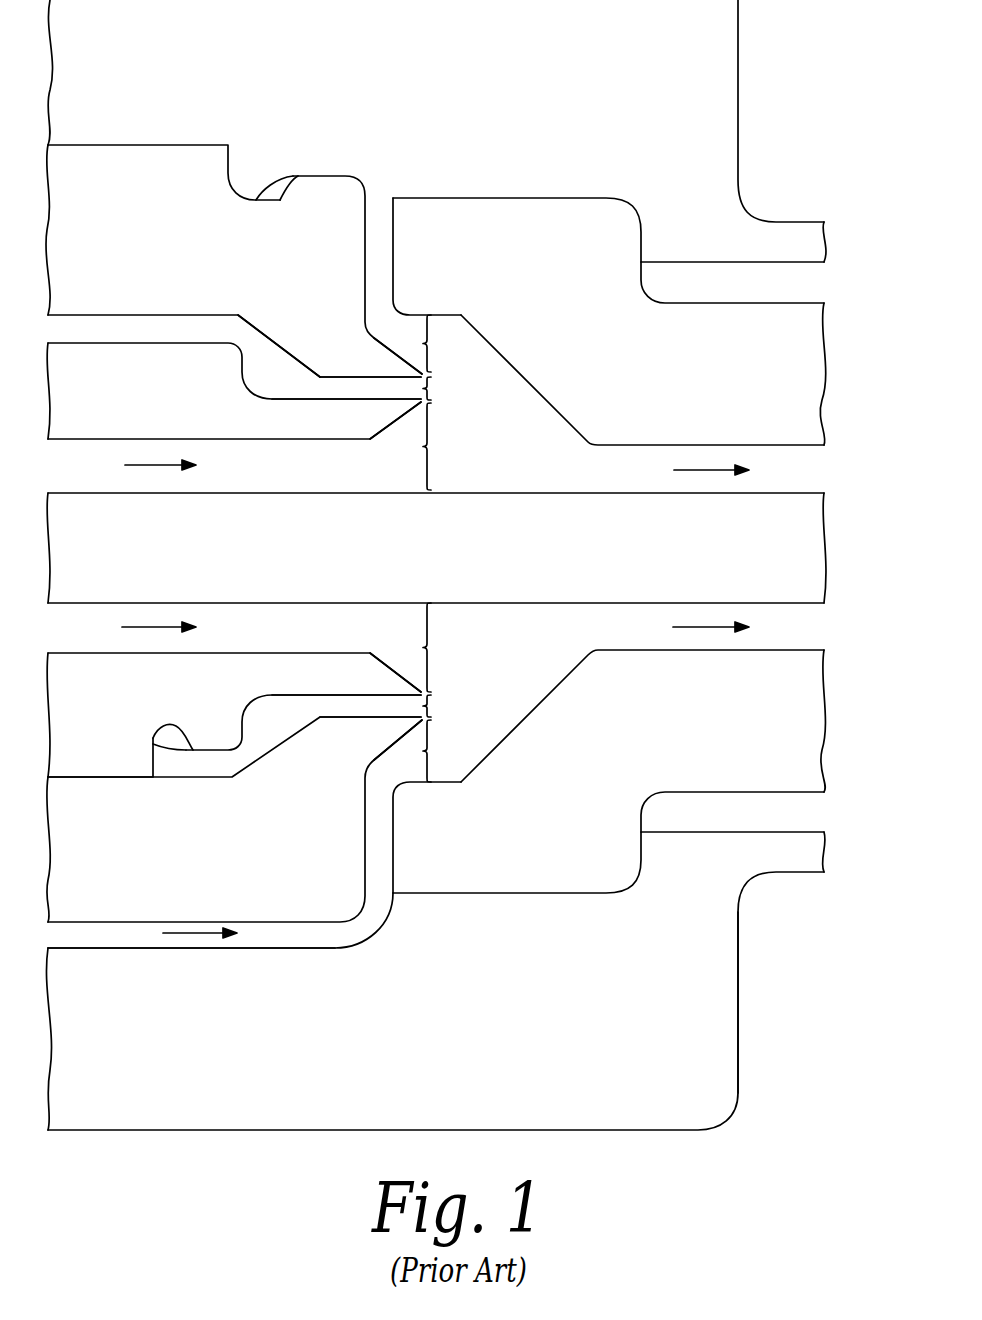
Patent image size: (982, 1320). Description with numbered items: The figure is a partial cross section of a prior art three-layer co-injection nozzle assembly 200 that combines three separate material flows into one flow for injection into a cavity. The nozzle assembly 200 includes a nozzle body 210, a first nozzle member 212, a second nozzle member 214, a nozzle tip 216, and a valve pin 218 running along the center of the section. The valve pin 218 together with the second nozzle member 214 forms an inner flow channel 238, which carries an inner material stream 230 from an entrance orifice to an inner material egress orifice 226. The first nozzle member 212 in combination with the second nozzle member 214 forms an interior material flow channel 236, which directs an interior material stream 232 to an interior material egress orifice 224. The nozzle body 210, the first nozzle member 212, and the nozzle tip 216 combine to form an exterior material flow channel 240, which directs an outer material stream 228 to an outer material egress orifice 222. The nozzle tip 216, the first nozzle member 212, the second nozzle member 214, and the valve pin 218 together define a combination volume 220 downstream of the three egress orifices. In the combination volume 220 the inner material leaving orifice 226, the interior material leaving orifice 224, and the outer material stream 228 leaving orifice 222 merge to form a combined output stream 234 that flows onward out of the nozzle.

The three-layer co-injection nozzle assembly 200 is at (776, 1005).
The nozzle body 210 is at (463, 62).
The first nozzle member 212 is at (192, 244).
The second nozzle member 214 is at (178, 408).
The nozzle tip 216 is at (711, 382).
The valve pin 218 is at (270, 564).
The combination volume 220 is at (541, 449).
The outer material egress orifice 222 is at (448, 548).
The interior material egress orifice 224 is at (448, 548).
The inner material egress orifice 226 is at (448, 547).
The outer material stream 228 is at (333, 171).
The inner material stream 230 is at (295, 482).
The interior material stream 232 is at (200, 342).
The combined output stream 234 is at (801, 482).
The interior material flow channel 236 is at (350, 376).
The inner flow channel 238 is at (346, 438).
The exterior material flow channel 240 is at (240, 949).